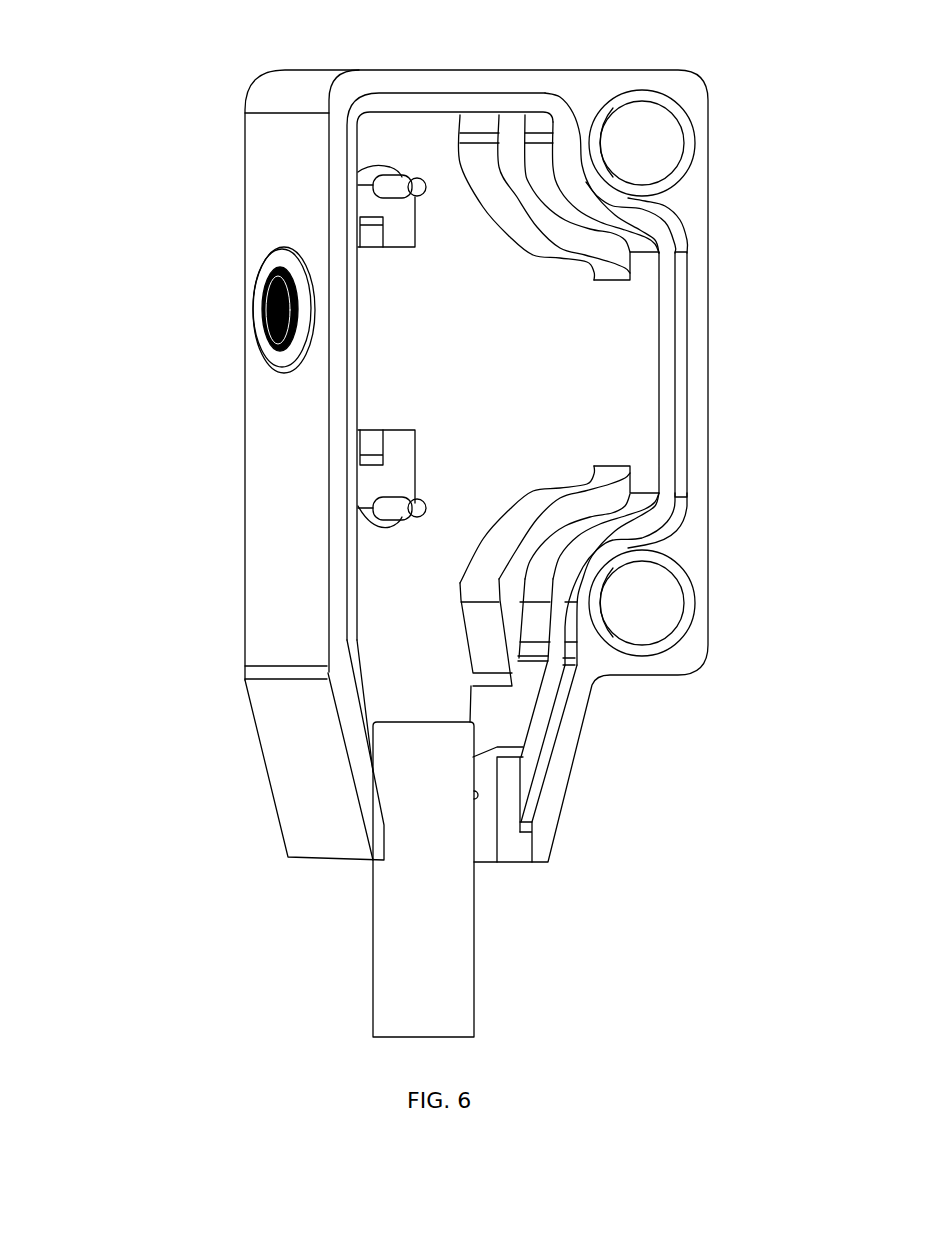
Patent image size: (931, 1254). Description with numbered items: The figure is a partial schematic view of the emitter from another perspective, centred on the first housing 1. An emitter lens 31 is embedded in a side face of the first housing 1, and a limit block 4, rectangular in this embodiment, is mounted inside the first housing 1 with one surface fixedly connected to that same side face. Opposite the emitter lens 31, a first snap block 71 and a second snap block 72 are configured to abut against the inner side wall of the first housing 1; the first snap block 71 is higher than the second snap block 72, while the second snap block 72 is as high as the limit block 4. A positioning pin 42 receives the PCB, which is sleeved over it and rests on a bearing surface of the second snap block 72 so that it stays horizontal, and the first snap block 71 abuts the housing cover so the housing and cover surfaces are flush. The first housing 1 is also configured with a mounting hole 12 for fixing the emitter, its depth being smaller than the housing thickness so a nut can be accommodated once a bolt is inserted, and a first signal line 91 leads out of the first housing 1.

The first housing 1 is at (311, 778).
The limit block 4 is at (380, 477).
The mounting hole 12 is at (640, 600).
The emitter lens 31 is at (260, 305).
The positioning pin 42 is at (393, 187).
The first snap block 71 is at (563, 132).
The second snap block 72 is at (508, 127).
The first signal line 91 is at (425, 955).